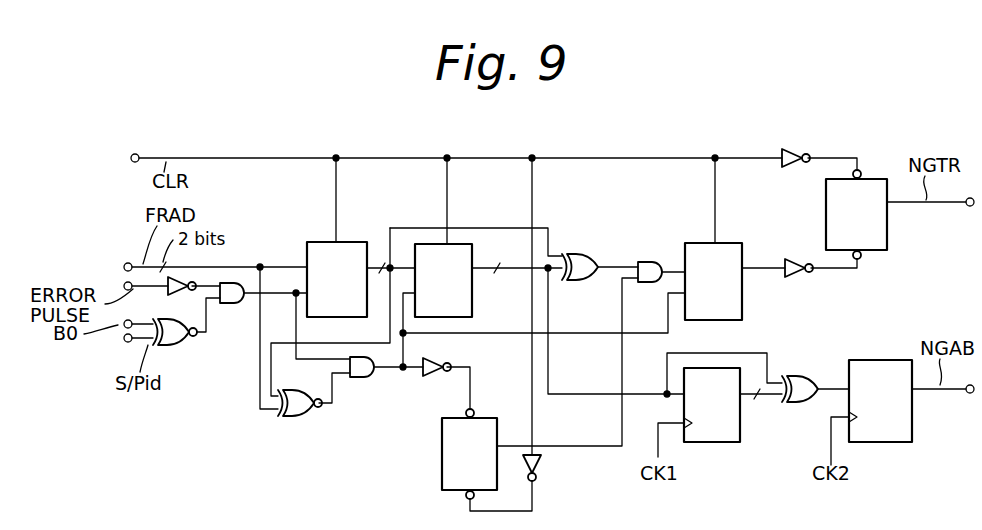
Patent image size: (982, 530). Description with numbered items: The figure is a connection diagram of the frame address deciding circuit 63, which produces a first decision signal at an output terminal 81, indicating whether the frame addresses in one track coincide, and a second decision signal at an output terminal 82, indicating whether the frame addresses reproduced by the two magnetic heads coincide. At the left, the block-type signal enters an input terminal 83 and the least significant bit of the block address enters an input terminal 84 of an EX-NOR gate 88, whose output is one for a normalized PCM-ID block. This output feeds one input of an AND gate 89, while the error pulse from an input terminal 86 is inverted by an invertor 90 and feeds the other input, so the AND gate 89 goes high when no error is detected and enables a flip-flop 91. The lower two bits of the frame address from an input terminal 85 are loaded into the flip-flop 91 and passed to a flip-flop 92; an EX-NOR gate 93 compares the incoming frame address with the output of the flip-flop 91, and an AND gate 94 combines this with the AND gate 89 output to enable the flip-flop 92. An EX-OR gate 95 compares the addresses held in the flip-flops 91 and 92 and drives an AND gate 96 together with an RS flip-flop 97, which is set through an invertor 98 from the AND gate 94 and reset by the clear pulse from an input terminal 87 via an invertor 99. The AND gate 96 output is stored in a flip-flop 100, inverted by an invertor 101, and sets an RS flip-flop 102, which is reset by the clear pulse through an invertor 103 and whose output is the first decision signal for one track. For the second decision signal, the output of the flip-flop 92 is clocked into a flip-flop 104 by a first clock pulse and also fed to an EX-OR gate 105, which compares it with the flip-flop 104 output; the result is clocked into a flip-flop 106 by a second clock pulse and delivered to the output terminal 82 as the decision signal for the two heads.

The frame address deciding circuit 63 is at (226, 396).
The output terminal 81 is at (970, 207).
The output terminal 82 is at (970, 394).
The input terminal 83 is at (124, 343).
The input terminal 84 is at (122, 330).
The input terminal 85 is at (126, 264).
The input terminal 86 is at (125, 285).
The input terminal 87 is at (129, 157).
The EX-NOR gate 88 is at (180, 346).
The AND gate 89 is at (235, 305).
The invertor 90 is at (183, 290).
The flip-flop 91 is at (322, 318).
The flip-flop 92 is at (472, 296).
The EX-NOR gate 93 is at (295, 418).
The AND gate 94 is at (362, 380).
The EX-OR gate 95 is at (585, 282).
The AND gate 96 is at (655, 260).
The RS flip-flop 97 is at (438, 462).
The invertor 98 is at (432, 380).
The invertor 99 is at (538, 474).
The flip-flop 100 is at (707, 322).
The invertor 101 is at (795, 286).
The RS flip-flop 102 is at (872, 254).
The invertor 103 is at (793, 172).
The flip-flop 104 is at (712, 444).
The EX-OR gate 105 is at (798, 402).
The flip-flop 106 is at (888, 444).